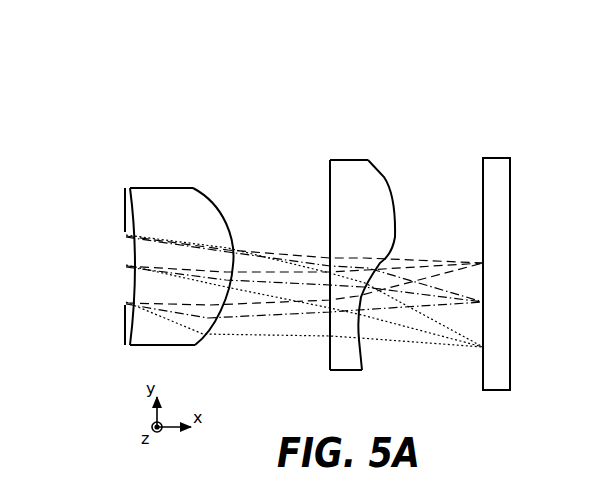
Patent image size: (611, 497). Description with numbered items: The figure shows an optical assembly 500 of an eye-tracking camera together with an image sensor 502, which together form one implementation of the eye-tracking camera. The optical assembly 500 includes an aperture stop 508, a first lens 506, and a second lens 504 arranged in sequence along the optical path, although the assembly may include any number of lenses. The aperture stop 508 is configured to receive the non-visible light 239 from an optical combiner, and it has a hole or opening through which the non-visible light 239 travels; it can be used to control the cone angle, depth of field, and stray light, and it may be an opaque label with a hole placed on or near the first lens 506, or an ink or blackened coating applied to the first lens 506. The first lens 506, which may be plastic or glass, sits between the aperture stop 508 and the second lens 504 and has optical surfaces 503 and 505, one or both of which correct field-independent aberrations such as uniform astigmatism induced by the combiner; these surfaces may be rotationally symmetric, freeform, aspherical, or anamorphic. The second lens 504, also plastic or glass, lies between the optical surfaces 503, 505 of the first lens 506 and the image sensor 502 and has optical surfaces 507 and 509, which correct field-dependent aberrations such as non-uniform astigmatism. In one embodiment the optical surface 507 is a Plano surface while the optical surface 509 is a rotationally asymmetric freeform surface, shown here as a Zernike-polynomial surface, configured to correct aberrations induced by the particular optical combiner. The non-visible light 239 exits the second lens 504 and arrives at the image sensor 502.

The optical assembly 500 is at (115, 117).
The image sensor 502 is at (500, 158).
The optical surface 503 is at (131, 249).
The second lens 504 is at (355, 167).
The optical surface 505 is at (218, 203).
The first lens 506 is at (165, 197).
The optical surface 507 is at (329, 234).
The aperture stop 508 is at (125, 188).
The optical surface 509 is at (395, 200).
The non-visible light 239 is at (131, 262).